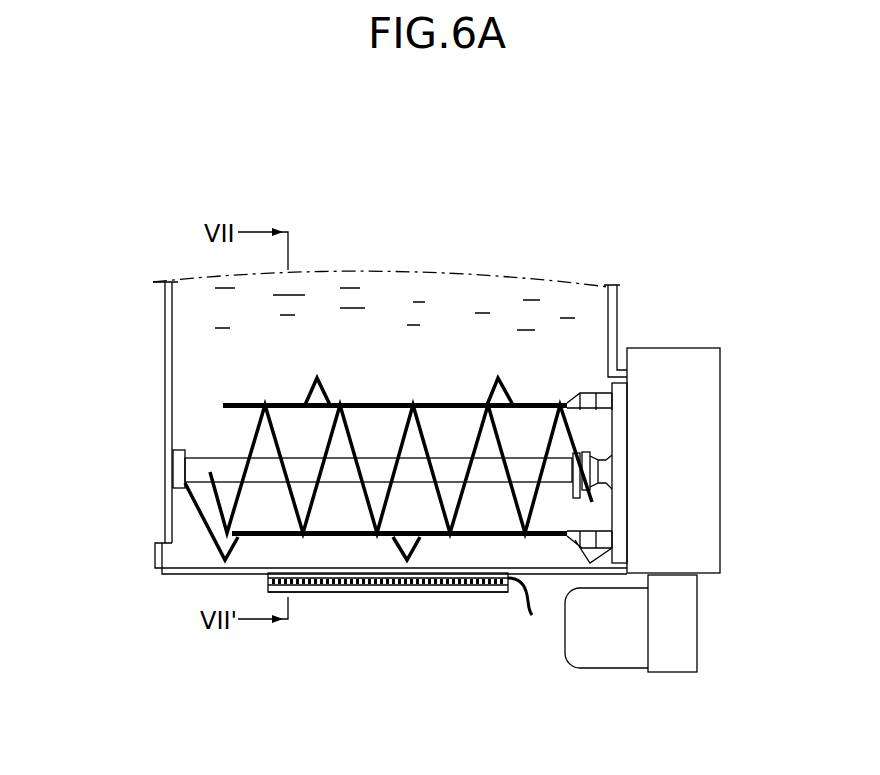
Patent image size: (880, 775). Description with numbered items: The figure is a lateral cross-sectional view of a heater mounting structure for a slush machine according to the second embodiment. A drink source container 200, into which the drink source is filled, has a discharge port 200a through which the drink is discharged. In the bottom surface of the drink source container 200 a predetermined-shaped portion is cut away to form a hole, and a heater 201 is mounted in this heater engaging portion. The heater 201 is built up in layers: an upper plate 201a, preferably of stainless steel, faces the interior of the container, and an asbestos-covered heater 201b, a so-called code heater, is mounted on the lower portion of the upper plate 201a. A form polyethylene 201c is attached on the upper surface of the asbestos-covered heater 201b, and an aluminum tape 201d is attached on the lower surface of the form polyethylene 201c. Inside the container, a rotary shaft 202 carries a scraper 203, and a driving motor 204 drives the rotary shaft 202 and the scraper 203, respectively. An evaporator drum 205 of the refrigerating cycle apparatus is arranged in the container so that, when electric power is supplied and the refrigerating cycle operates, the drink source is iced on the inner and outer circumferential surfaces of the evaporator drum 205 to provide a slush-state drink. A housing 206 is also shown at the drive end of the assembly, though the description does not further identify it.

The drink source container 200 is at (145, 318).
The discharge port 200a is at (160, 556).
The heater 201 is at (423, 642).
The upper plate 201a is at (320, 574).
The asbestos-covered heater 201b is at (400, 579).
The form polyethylene 201c is at (455, 590).
The aluminum tape 201d is at (485, 592).
The rotary shaft 202 is at (377, 467).
The scraper 203 is at (357, 430).
The driving motor 204 is at (608, 660).
The evaporator drum 205 is at (240, 392).
The gear housing 206 is at (672, 360).